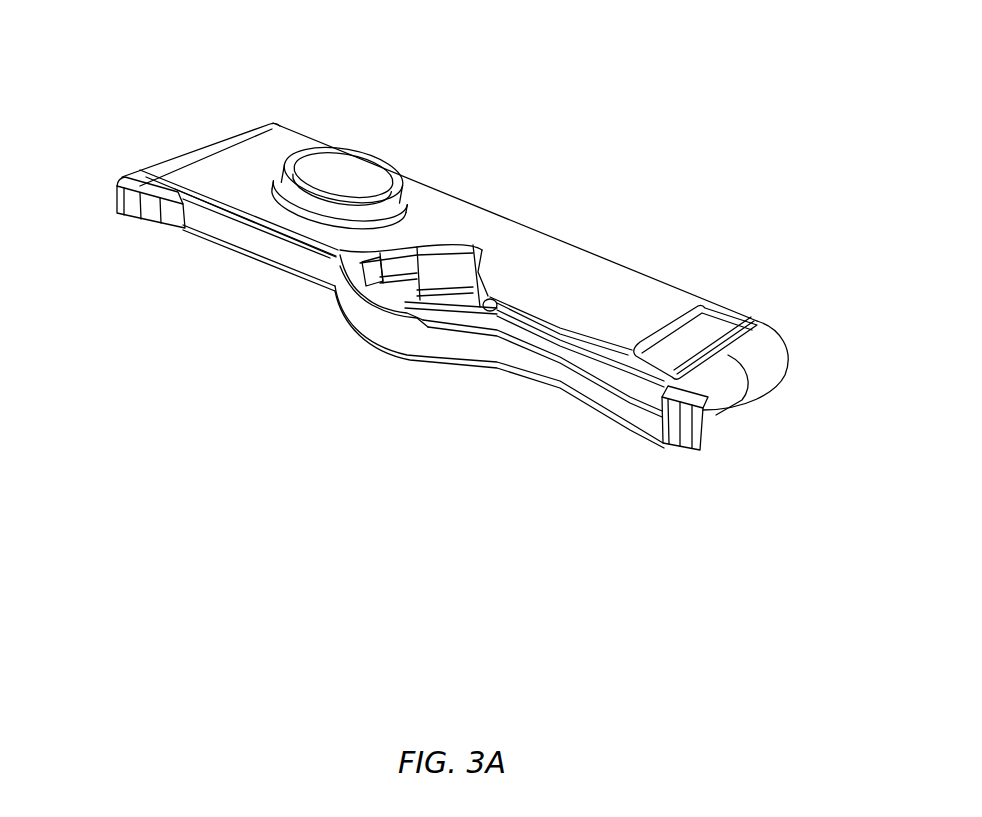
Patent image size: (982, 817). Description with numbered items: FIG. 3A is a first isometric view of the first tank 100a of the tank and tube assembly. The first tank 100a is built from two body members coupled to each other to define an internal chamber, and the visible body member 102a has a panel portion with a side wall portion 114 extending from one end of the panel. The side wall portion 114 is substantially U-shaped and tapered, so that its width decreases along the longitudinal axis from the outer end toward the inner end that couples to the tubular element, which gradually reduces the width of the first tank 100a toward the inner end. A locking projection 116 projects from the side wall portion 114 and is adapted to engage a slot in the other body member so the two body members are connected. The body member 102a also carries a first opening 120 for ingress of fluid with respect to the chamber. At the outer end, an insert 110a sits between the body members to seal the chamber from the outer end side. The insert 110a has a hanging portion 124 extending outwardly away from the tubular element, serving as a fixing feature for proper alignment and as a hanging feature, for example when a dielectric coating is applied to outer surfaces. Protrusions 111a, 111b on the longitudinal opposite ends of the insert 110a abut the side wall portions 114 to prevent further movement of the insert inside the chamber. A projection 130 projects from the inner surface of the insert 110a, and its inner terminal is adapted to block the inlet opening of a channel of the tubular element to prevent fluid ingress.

The first tank 100a is at (186, 129).
The body member 102a is at (532, 257).
The insert 110a is at (246, 254).
The protrusion 111a is at (124, 215).
The protrusion 111b is at (682, 423).
The side wall portion 114 is at (772, 370).
The locking projection 116 is at (698, 337).
The first opening 120 is at (353, 192).
The hanging portion 124 is at (393, 337).
The projection 130 is at (448, 274).